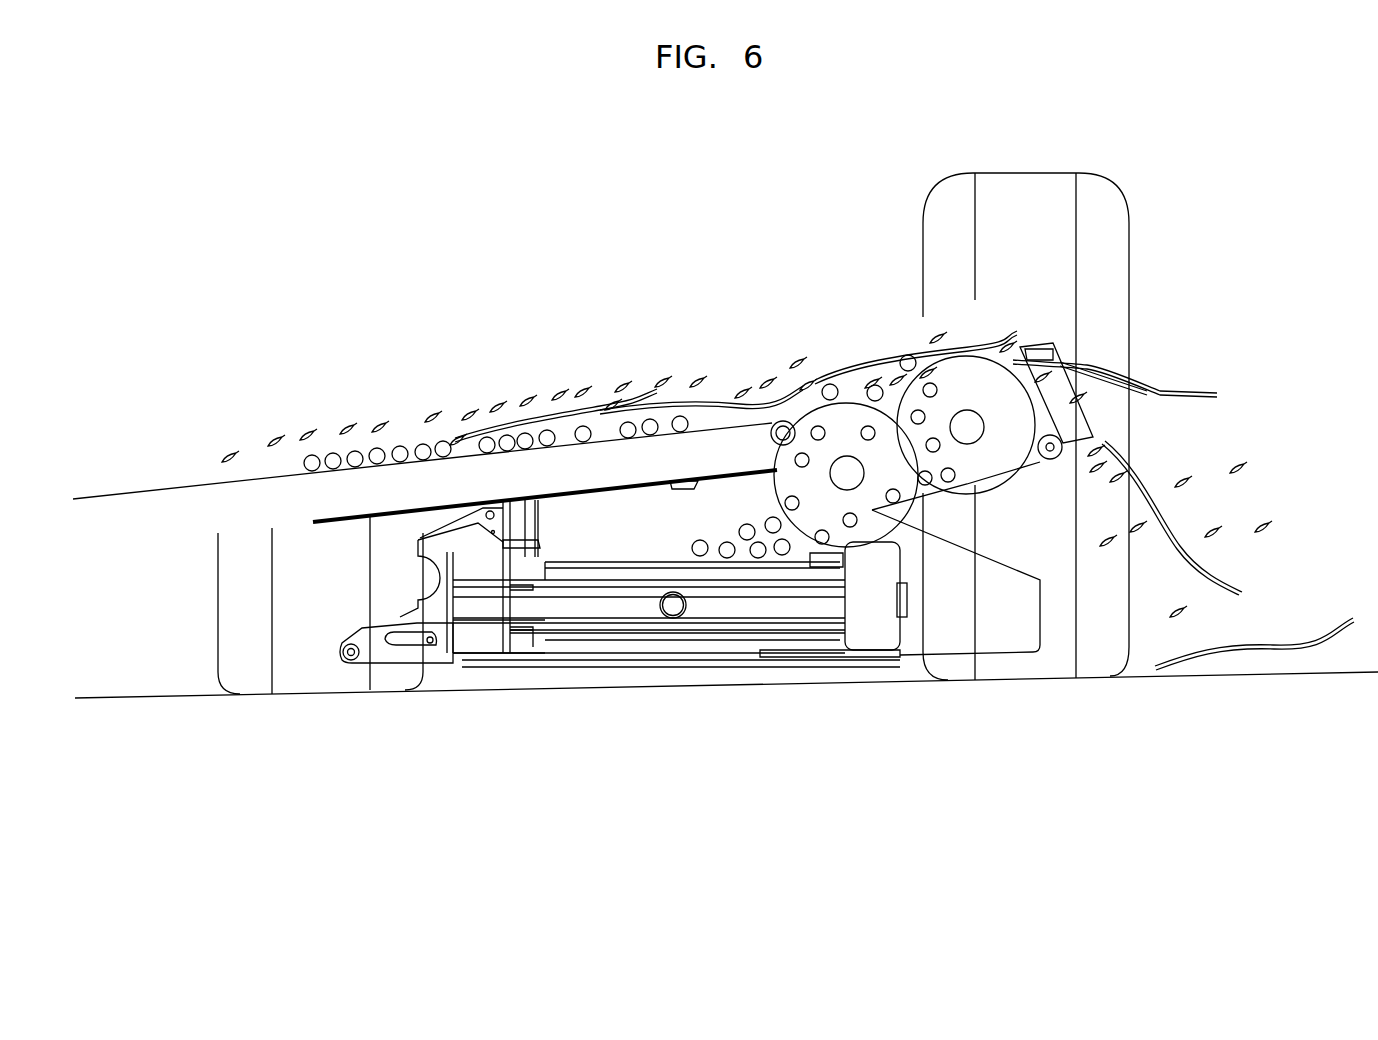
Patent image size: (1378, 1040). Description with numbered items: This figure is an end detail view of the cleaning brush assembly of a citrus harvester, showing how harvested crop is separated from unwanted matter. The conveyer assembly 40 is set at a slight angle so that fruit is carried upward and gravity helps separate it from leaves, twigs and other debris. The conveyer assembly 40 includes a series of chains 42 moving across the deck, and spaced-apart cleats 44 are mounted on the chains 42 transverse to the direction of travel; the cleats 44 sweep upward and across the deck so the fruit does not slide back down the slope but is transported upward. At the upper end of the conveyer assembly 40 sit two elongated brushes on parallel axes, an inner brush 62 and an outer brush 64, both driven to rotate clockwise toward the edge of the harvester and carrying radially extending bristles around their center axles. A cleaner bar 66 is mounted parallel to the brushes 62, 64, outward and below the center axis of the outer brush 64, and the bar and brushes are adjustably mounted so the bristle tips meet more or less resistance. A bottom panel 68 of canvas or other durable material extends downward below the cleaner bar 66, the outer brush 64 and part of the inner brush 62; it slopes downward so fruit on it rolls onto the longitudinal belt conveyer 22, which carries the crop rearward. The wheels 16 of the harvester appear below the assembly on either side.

The wheels 16 is at (298, 668).
The longitudinal belt conveyer 22 is at (577, 563).
The conveyer assembly 40 is at (564, 302).
The chains 42 is at (119, 496).
The cleats 44 is at (297, 455).
The inner brush 62 is at (848, 423).
The outer brush 64 is at (968, 383).
The cleaner bar 66 is at (1060, 445).
The bottom panel 68 is at (967, 483).